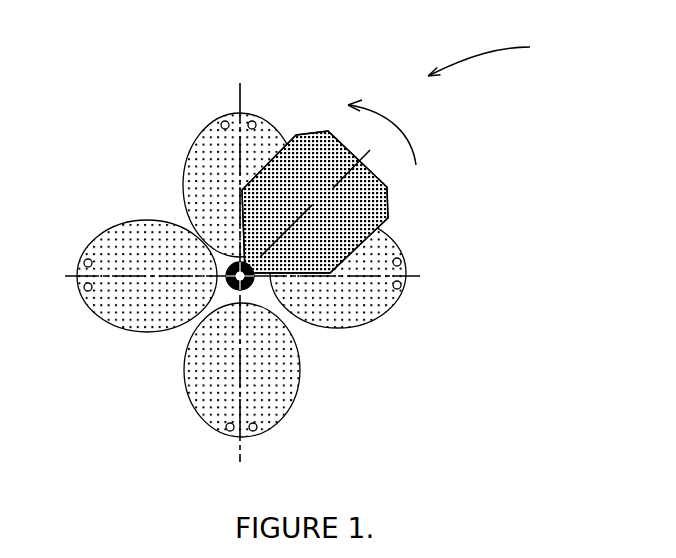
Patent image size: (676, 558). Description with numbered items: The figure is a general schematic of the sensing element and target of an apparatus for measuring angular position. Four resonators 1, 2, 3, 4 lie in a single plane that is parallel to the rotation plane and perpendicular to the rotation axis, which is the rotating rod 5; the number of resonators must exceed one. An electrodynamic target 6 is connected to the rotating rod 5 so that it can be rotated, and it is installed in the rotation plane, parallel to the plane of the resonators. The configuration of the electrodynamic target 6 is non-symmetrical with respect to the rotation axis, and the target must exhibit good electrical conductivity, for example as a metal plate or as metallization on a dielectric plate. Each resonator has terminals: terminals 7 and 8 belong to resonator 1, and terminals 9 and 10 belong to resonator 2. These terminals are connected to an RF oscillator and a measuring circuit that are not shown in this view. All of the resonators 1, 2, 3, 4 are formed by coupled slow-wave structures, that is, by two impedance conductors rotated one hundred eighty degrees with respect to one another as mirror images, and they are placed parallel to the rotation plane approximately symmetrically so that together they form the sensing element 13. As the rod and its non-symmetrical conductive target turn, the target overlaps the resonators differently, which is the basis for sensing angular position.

The resonator 1 is at (197, 132).
The resonator 2 is at (390, 232).
The resonator 3 is at (297, 393).
The resonator 4 is at (92, 312).
The rotating rod 5 is at (230, 266).
The electrodynamic target 6 is at (325, 131).
The terminal 7 is at (221, 119).
The terminal 8 is at (252, 120).
The terminal 9 is at (403, 262).
The terminal 10 is at (403, 290).
The sensing element 13 is at (503, 55).